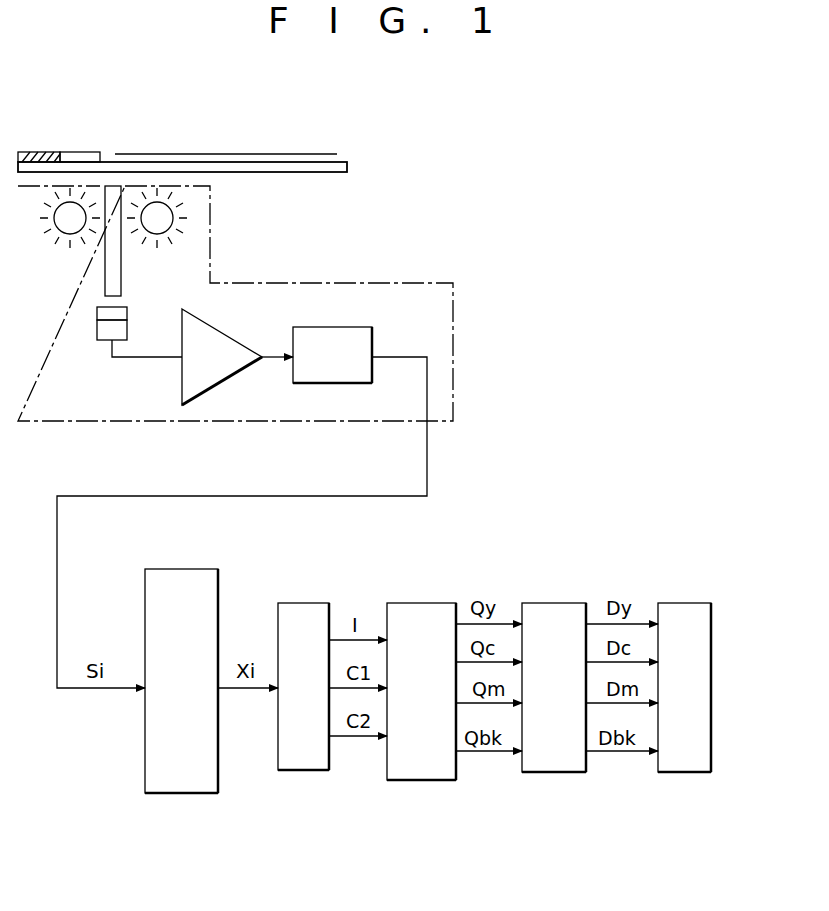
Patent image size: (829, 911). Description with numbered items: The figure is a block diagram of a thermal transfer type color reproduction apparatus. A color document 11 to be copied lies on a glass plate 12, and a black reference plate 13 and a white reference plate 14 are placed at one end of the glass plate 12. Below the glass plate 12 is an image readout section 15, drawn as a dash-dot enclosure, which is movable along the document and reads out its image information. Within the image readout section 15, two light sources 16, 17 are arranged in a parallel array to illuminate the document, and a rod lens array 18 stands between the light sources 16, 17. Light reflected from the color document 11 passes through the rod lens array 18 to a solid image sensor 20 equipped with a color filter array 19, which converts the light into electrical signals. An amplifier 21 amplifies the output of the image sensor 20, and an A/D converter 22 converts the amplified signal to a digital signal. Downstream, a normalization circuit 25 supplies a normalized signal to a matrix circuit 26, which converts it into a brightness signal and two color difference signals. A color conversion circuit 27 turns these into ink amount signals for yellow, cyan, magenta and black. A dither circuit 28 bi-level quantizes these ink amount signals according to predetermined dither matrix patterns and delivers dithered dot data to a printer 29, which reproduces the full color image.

The color document 11 is at (314, 153).
The glass plate 12 is at (349, 168).
The black reference plate 13 is at (46, 124).
The white reference plate 14 is at (94, 124).
The image readout section 15 is at (343, 283).
The light source 16 is at (56, 236).
The light source 17 is at (180, 210).
The rod lens array 18 is at (102, 263).
The color filter array 19 is at (128, 320).
The solid image sensor 20 is at (112, 342).
The amplifier 21 is at (218, 333).
The A/D converter 22 is at (374, 337).
The normalization circuit 25 is at (215, 568).
The matrix circuit 26 is at (326, 603).
The color conversion circuit 27 is at (452, 603).
The dither circuit 28 is at (583, 603).
The printer 29 is at (703, 603).